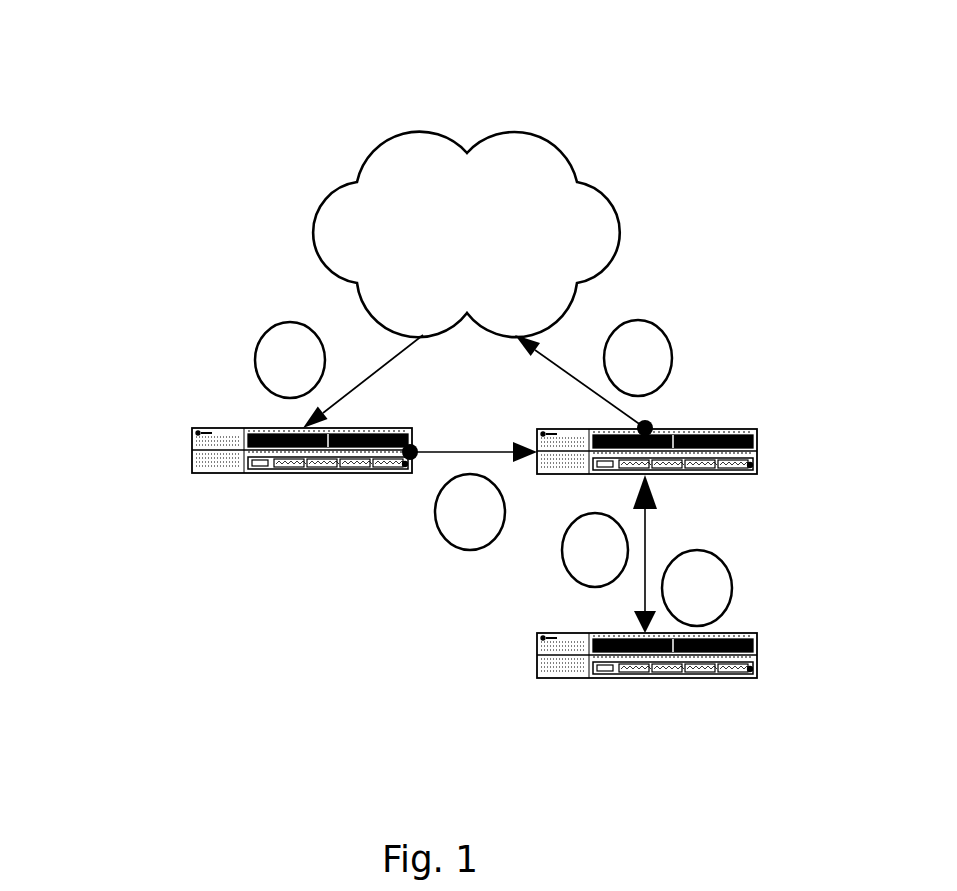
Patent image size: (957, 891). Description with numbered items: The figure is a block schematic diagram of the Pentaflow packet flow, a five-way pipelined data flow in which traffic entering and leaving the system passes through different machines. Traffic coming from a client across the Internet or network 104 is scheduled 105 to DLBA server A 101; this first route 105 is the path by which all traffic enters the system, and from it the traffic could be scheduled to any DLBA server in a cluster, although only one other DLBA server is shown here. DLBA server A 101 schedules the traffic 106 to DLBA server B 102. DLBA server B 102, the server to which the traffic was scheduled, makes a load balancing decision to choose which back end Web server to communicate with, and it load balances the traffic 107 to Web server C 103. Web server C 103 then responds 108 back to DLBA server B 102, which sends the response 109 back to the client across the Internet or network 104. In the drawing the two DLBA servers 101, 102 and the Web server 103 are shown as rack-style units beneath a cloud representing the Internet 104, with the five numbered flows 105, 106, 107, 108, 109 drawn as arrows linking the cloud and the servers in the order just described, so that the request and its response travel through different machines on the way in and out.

The DLBA server A 101 is at (195, 418).
The DLBA server B 102 is at (760, 418).
The Web server C 103 is at (535, 683).
The Internet or network 104 is at (404, 103).
The route 1 (scheduling of traffic) 105 is at (265, 315).
The scheduled traffic 106 is at (432, 535).
The load balanced traffic 107 is at (552, 568).
The response 108 is at (732, 587).
The response to client 109 is at (672, 330).